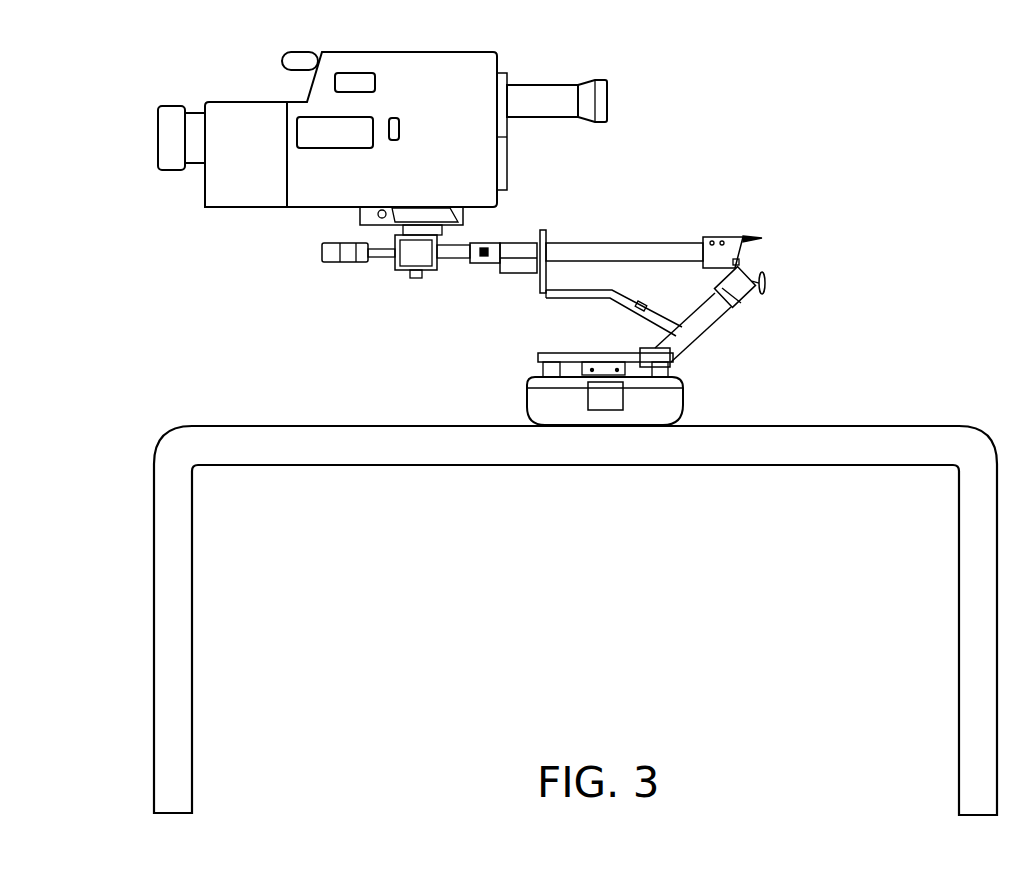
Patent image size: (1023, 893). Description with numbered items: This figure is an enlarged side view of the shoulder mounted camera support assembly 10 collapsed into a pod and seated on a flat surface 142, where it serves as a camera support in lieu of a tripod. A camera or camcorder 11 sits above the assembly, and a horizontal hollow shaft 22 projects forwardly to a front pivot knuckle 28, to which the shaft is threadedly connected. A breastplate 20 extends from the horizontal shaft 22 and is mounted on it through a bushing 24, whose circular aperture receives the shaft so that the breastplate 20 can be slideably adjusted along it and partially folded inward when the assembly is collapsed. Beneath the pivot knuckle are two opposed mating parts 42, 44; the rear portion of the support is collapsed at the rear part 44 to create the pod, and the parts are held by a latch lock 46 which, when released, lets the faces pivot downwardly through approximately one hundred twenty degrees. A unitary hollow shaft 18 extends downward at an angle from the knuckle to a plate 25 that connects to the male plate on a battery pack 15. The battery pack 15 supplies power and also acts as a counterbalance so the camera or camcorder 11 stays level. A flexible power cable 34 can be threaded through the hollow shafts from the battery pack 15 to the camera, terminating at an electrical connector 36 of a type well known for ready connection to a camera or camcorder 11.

The shoulder mounted camera support assembly 10 is at (707, 192).
The camera or camcorder 11 is at (205, 197).
The battery pack 15 is at (537, 400).
The hollow shaft 18 is at (560, 83).
The breastplate 20 is at (557, 302).
The hollow shaft 22 is at (637, 243).
The bushing 24 is at (541, 232).
The plate 25 is at (568, 353).
The front pivot knuckle 28 is at (511, 240).
The power cable 34 is at (745, 262).
The electrical connector 36 is at (322, 254).
The second part of pivot knuckle 42 is at (735, 237).
The rear part of pivot knuckle 44 is at (741, 305).
The latch lock 46 is at (766, 286).
The flat surface 142 is at (692, 465).